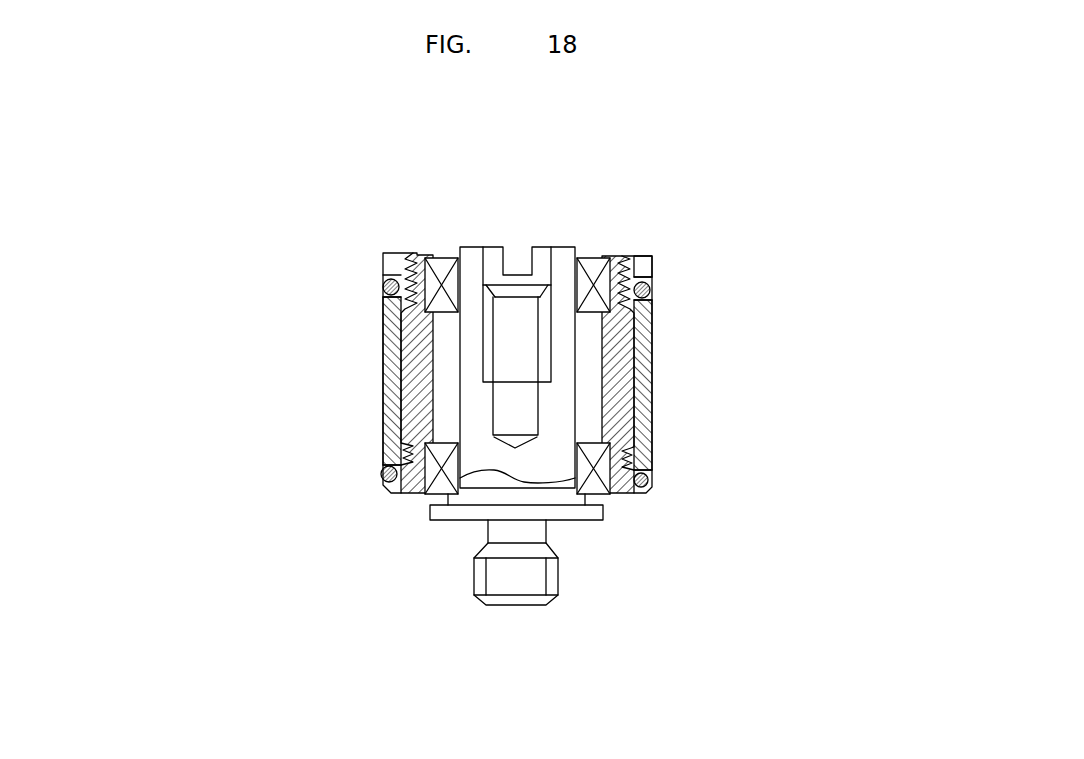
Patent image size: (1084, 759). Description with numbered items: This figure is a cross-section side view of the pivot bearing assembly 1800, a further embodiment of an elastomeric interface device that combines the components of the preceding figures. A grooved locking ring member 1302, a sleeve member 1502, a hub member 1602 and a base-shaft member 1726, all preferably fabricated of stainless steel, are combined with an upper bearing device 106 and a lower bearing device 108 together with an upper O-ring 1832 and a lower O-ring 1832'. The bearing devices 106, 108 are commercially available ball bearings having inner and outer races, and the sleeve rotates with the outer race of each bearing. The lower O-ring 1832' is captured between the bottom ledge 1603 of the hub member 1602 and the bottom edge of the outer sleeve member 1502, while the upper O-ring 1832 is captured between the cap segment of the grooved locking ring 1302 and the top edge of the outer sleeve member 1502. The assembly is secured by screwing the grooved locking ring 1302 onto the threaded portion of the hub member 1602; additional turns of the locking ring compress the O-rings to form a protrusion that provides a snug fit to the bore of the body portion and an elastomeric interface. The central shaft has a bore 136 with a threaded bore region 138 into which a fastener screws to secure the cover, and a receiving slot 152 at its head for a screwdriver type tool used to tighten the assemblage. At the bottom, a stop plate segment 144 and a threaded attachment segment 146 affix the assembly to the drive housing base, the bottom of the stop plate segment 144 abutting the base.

The pivot bearing assembly 1800 is at (466, 178).
The receiving slot 152 is at (514, 259).
The upper bearing device 106 is at (593, 262).
The bore 136 is at (523, 420).
The grooved locking ring member 1302 is at (645, 267).
The threaded bore region 138 is at (518, 348).
The upper O-ring 1832 is at (416, 263).
The hub member 1602 is at (413, 356).
The sleeve member 1502 is at (392, 404).
The base-shaft member 1726 is at (447, 429).
The lower O-ring 1832' is at (439, 495).
The bottom ledge 1603 is at (652, 484).
The stop plate segment 144 is at (597, 513).
The threaded attachment segment 146 is at (548, 602).
The lower bearing device 108 is at (437, 483).